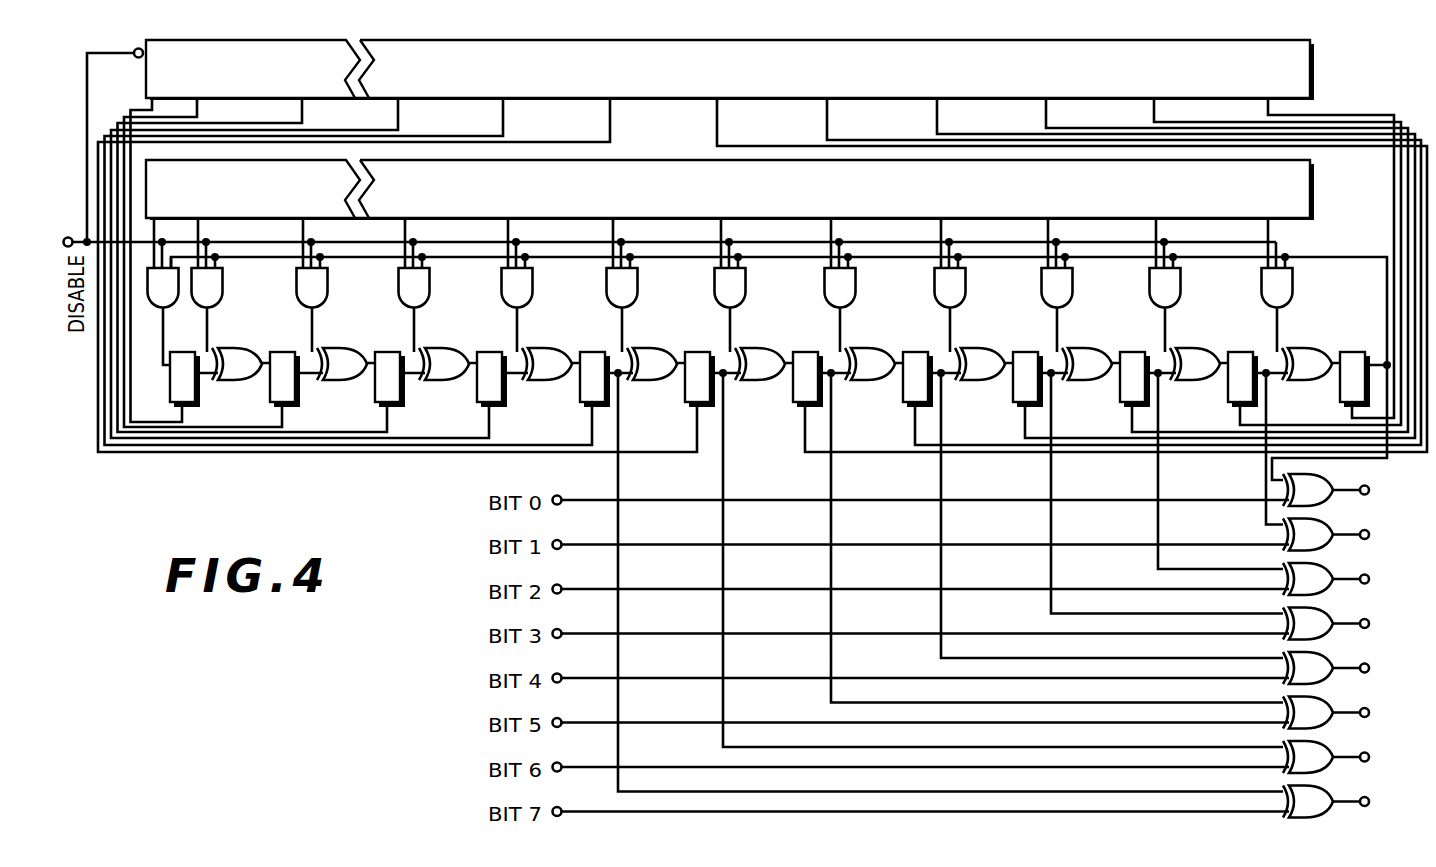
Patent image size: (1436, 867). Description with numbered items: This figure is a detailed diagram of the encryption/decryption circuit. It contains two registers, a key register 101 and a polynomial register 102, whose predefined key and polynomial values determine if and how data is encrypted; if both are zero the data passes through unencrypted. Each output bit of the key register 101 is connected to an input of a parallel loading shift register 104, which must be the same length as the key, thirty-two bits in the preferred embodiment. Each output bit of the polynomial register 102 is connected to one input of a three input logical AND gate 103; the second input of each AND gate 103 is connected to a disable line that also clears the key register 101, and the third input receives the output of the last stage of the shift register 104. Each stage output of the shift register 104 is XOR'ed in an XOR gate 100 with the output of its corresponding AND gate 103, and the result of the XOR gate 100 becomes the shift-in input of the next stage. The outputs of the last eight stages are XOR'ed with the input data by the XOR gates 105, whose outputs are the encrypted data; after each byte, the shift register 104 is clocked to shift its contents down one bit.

The exclusive-OR gate 100 is at (237, 381).
The key register 101 is at (1312, 62).
The polynomial register 102 is at (1312, 162).
The three input logical AND gate 103 is at (1298, 250).
The parallel loading shift register 104 is at (280, 351).
The XOR gates 105 is at (1390, 811).